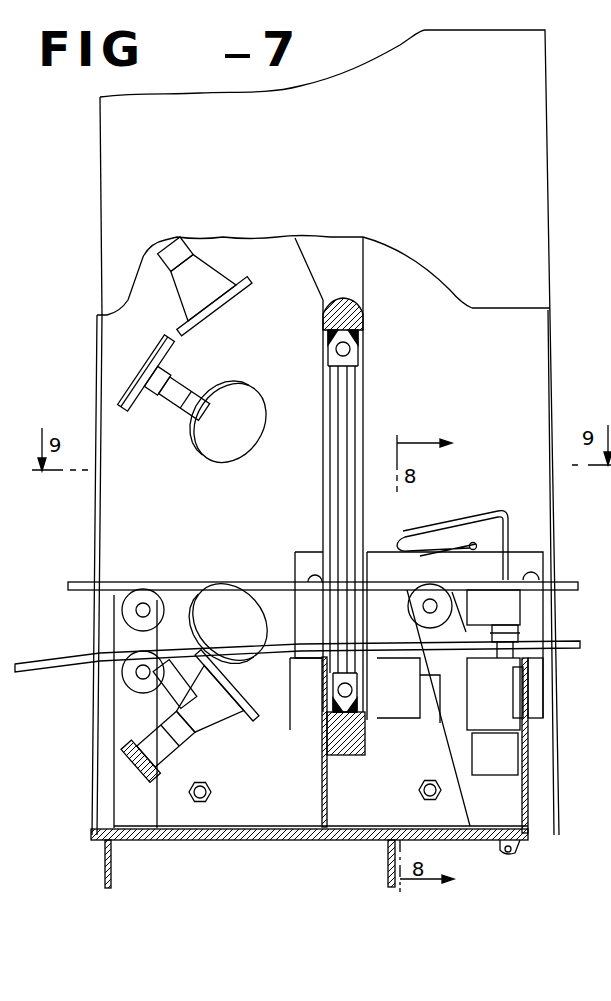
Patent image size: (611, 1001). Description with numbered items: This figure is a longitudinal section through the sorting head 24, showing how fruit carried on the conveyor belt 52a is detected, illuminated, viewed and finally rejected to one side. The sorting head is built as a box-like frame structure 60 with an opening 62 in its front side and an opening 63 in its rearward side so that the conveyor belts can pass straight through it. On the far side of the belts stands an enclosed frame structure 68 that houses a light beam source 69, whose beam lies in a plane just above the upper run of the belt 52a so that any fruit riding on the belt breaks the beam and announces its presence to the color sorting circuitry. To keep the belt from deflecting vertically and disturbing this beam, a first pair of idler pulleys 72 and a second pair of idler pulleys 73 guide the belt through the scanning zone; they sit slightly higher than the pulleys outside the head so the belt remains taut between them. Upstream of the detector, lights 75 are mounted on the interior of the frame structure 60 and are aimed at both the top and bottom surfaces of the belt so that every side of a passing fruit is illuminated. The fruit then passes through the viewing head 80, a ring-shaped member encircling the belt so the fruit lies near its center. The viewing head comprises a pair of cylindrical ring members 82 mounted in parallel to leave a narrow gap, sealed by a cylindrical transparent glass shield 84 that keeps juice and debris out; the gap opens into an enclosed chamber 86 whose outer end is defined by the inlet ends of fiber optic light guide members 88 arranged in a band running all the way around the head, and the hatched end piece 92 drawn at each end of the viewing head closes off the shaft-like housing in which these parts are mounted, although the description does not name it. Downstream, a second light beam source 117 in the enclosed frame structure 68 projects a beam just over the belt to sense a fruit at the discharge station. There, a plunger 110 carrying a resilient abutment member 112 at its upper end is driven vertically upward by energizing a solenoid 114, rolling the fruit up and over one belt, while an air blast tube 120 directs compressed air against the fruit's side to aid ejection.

The sorting head 24 is at (88, 249).
The box-like frame structure 60 is at (548, 173).
The opening 62 is at (98, 324).
The opening 63 is at (551, 315).
The viewing head 80 is at (371, 291).
The cylindrical ring members 82 is at (330, 344).
The transparent glass shield 84 is at (328, 366).
The enclosed chamber 86 is at (349, 352).
The fiber optic light guide members 88 is at (328, 306).
The bearing cap 92 is at (364, 320).
The lights 75 is at (226, 392).
The conveyor belt 52a is at (178, 583).
The first pair of idler pulleys 72 is at (127, 660).
The light beam source 69 is at (299, 557).
The enclosed frame structure 68 is at (377, 558).
The air blast tubes 120 is at (473, 521).
The second pair of idler pulleys 73 is at (440, 590).
The light beam source 117 is at (538, 575).
The resilient abutment member 112 is at (478, 614).
The plungers 110 is at (482, 634).
The solenoid 114 is at (478, 702).